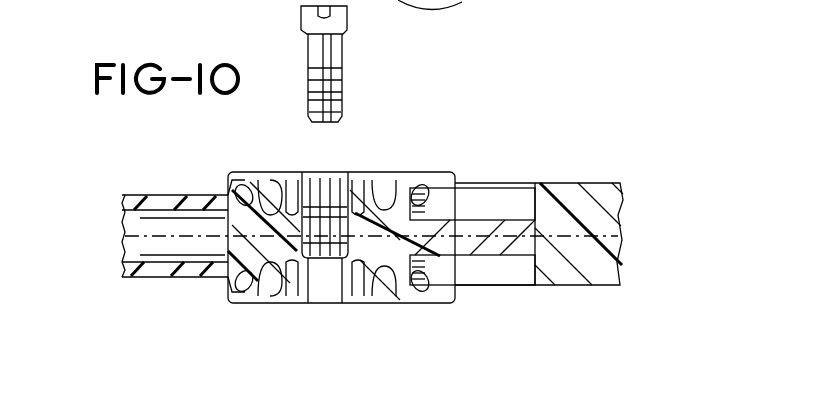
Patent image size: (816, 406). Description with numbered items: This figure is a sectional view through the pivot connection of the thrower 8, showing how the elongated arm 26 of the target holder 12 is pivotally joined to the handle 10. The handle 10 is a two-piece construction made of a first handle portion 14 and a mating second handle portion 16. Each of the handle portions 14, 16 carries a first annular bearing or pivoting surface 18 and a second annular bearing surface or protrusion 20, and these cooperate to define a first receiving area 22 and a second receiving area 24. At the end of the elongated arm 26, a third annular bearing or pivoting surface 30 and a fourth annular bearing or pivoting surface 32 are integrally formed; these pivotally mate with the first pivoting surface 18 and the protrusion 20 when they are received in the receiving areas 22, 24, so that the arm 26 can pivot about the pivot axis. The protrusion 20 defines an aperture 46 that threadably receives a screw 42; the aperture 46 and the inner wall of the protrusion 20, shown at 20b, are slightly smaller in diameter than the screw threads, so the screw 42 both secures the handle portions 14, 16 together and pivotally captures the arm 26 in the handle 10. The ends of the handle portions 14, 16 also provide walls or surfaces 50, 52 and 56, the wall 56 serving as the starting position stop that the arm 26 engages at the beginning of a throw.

The thrower 8 is at (530, 168).
The handle 10 is at (118, 236).
The target holder 12 is at (625, 211).
The first handle portion 14 is at (148, 282).
The second handle portion 16 is at (145, 194).
The first annular bearing or pivoting surface 18 is at (388, 180).
The second annular bearing, pivoting surface or protrusion 20 is at (323, 170).
The passage bottom 20b is at (358, 305).
The first receiving area 22 is at (230, 204).
The second receiving area 24 is at (266, 180).
The elongated arm 26 is at (596, 182).
The third annular bearing or pivoting surface 30 is at (244, 182).
The fourth annular bearing or pivoting surface 32 is at (292, 180).
The screw 42 is at (342, 52).
The aperture 46 is at (420, 200).
The wall or surface 50 is at (452, 303).
The wall or surface 52 is at (455, 172).
The wall 56 is at (455, 0).